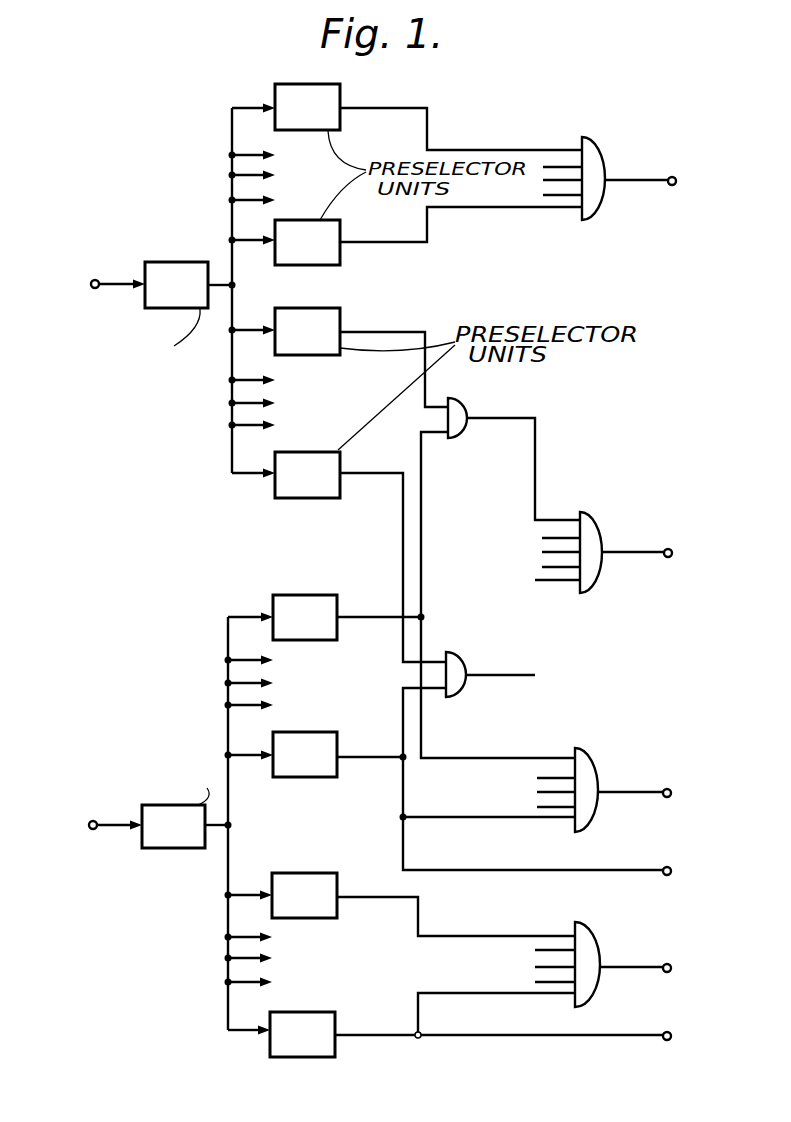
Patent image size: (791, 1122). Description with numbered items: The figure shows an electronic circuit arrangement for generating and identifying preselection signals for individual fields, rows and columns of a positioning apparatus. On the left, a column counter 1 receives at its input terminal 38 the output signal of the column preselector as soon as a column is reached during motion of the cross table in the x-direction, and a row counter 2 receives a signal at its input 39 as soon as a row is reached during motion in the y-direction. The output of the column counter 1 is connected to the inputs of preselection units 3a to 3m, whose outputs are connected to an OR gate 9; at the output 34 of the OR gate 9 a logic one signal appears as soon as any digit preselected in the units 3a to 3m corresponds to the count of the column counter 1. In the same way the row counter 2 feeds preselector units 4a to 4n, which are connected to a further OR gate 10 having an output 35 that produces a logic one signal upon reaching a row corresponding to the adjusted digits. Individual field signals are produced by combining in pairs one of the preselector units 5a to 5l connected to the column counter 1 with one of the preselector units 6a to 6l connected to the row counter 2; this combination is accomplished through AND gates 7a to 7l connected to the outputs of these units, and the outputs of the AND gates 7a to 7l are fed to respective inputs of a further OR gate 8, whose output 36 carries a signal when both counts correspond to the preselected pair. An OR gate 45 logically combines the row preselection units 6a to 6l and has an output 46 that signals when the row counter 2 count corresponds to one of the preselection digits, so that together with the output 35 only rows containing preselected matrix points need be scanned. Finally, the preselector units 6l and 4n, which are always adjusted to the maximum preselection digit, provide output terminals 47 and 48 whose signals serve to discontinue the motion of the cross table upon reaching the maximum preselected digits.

The column counter 1 is at (166, 299).
The row counter 2 is at (163, 839).
The preselection unit 3a is at (292, 120).
The preselection unit 3m is at (290, 256).
The preselector unit 5a is at (292, 344).
The preselector unit 5l is at (294, 488).
The preselector unit 6a is at (290, 630).
The preselector unit 6l is at (292, 768).
The preselector unit 4a is at (289, 909).
The preselector unit 4n is at (287, 1048).
The AND gate 7a is at (466, 412).
The AND gate 7l is at (456, 661).
The OR gate 8 is at (604, 528).
The OR gate 9 is at (599, 147).
The OR gate 10 is at (597, 930).
The OR gate 45 is at (600, 818).
The output 34 is at (672, 177).
The output 35 is at (672, 964).
The output 36 is at (668, 549).
The input terminal 38 is at (94, 289).
The input 39 is at (92, 830).
The output 46 is at (669, 789).
The output terminal 47 is at (677, 862).
The output terminal 48 is at (669, 1032).